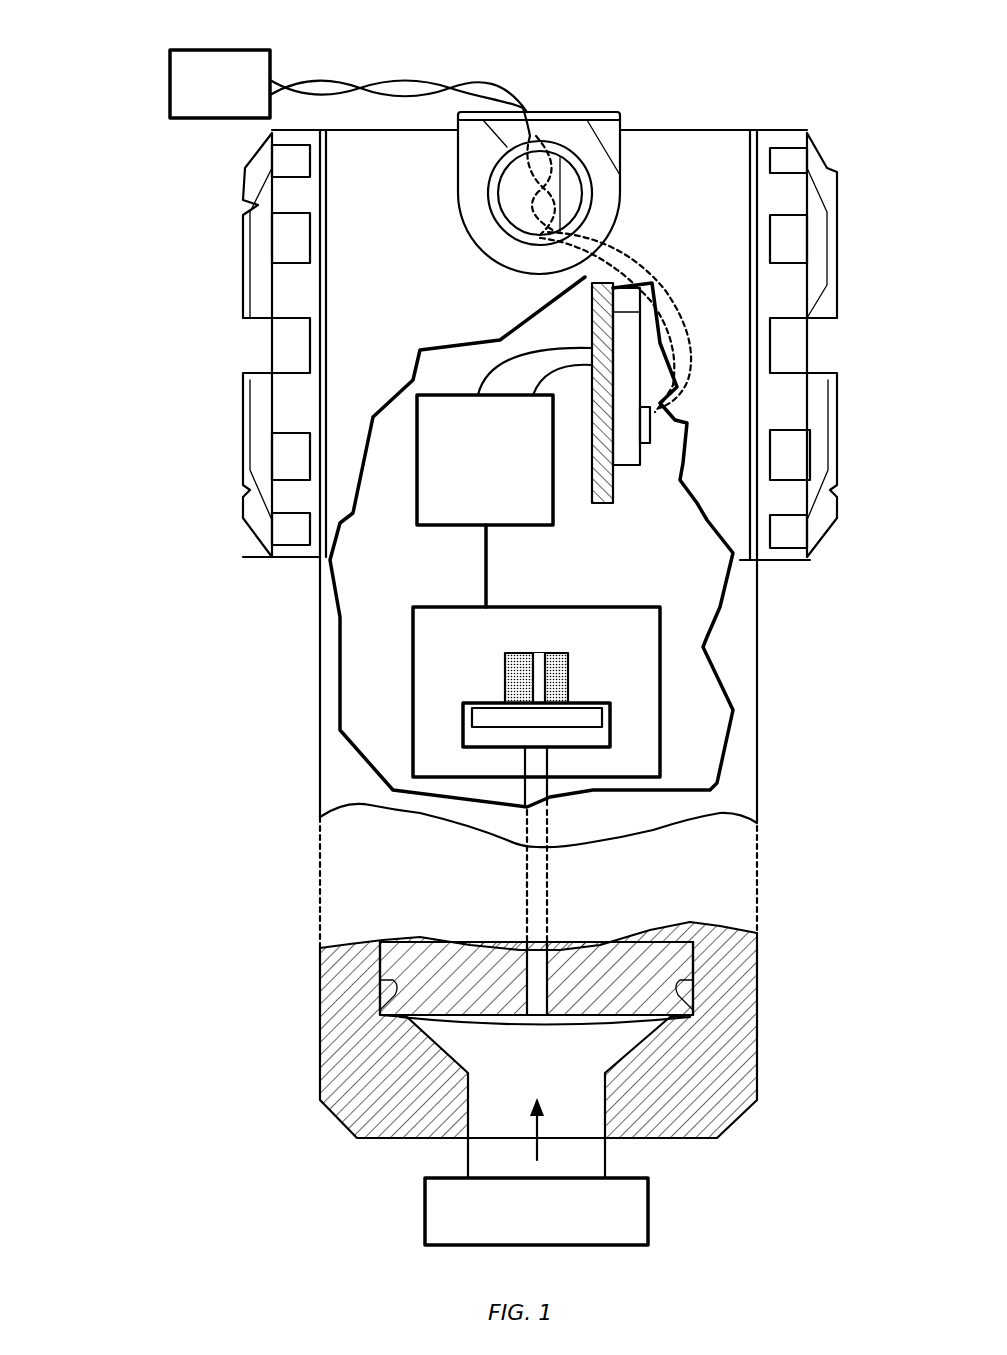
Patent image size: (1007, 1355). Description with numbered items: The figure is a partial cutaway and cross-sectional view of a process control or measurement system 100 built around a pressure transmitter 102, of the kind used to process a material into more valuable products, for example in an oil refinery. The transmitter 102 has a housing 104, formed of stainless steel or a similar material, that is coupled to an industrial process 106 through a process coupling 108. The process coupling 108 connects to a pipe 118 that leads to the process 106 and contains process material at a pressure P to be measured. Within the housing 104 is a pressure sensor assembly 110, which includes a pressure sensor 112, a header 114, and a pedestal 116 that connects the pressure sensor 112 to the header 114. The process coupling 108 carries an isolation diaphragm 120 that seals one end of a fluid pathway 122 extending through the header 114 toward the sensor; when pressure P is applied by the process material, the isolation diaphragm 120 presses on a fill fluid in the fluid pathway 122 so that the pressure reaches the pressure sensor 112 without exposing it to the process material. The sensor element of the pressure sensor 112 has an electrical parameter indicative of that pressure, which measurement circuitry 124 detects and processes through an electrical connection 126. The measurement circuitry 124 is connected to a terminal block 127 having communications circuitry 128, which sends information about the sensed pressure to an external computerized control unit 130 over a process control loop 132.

The process control or measurement system 100 is at (128, 44).
The pressure transmitter 102 is at (848, 122).
The housing 104 is at (705, 130).
The industrial process 106 is at (625, 1227).
The process coupling 108 is at (330, 1032).
The pressure sensor assembly 110 is at (392, 637).
The pressure sensor 112 is at (495, 715).
The header 114 is at (650, 632).
The pedestal 116 is at (568, 672).
The pipe 118 is at (600, 1158).
The isolation diaphragm 120 is at (567, 1018).
The fluid pathway 122 is at (533, 975).
The measurement circuitry 124 is at (538, 500).
The electrical connection 126 is at (486, 585).
The terminal block 127 is at (597, 318).
The communications circuitry 128 is at (627, 455).
The external computerized control unit 130 is at (200, 107).
The process control loop 132 is at (522, 84).